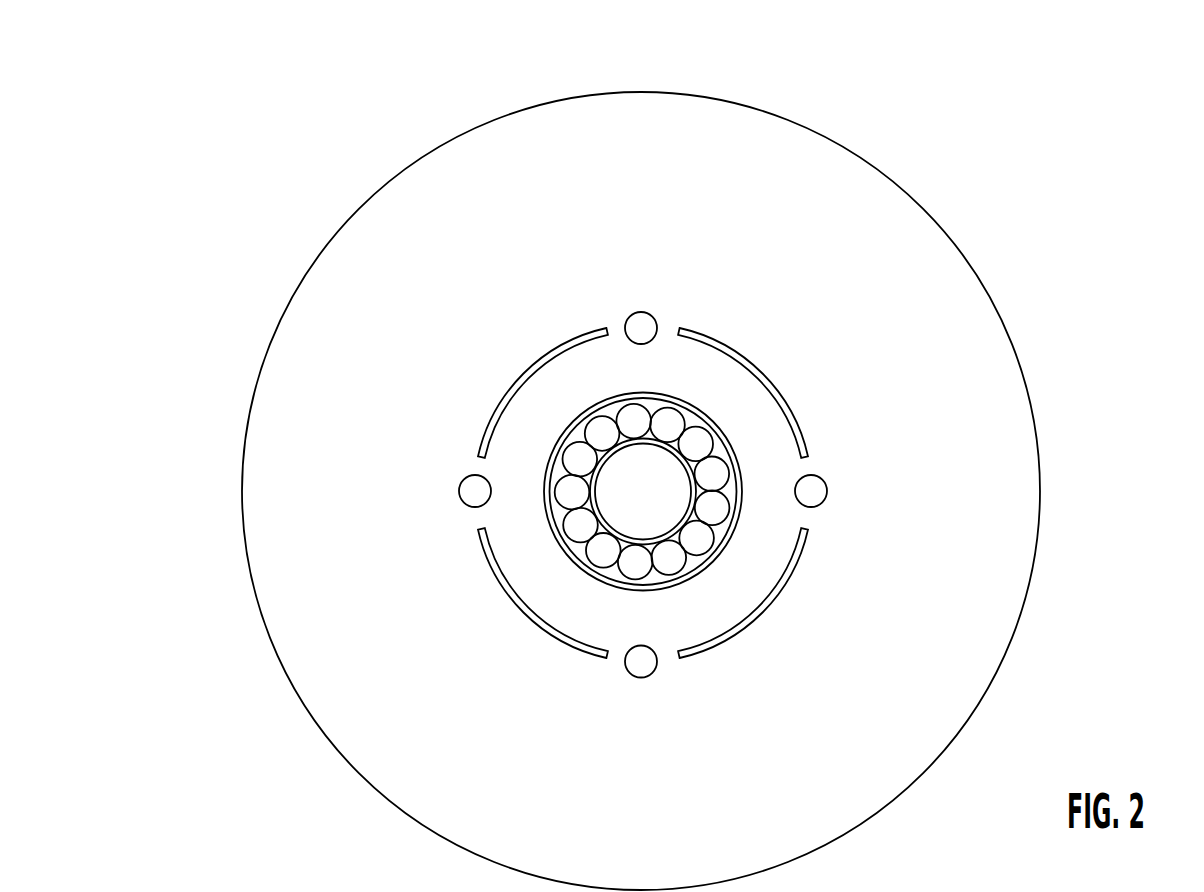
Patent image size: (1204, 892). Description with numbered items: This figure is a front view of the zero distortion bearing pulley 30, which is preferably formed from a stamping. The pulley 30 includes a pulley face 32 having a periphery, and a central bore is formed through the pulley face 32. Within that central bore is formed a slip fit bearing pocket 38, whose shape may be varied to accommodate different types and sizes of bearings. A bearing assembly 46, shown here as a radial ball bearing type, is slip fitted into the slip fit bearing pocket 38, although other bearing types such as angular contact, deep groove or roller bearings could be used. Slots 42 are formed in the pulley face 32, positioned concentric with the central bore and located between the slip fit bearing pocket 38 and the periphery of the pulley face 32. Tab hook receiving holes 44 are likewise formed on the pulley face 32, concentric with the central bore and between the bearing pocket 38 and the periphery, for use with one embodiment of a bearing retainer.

The zero distortion bearing pulley 30 is at (1036, 204).
The pulley face 32 is at (993, 375).
The slip fit bearing pocket 38 is at (612, 579).
The slots 42 is at (753, 363).
The tab hook receiving holes 44 is at (641, 325).
The bearing assembly 46 is at (712, 511).